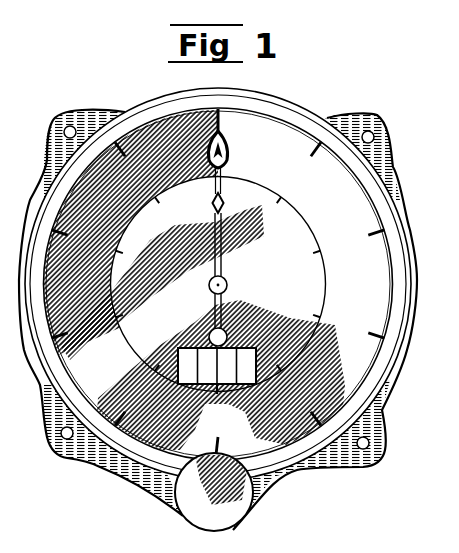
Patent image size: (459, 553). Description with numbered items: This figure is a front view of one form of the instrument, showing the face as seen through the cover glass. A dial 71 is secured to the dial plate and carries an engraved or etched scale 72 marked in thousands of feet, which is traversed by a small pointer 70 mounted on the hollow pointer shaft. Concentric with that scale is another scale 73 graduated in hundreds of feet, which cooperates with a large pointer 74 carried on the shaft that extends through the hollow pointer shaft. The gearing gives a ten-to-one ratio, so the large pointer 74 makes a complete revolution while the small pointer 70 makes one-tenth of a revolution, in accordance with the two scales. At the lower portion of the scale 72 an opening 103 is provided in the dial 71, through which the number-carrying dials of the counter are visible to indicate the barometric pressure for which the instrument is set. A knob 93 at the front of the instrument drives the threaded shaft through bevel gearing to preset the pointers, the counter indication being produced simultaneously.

The small pointer 70 is at (223, 199).
The dial 71 is at (375, 303).
The scale 72 is at (311, 249).
The scale 73 is at (372, 241).
The large pointer 74 is at (227, 167).
The knob 93 is at (188, 497).
The opening 103 is at (229, 348).